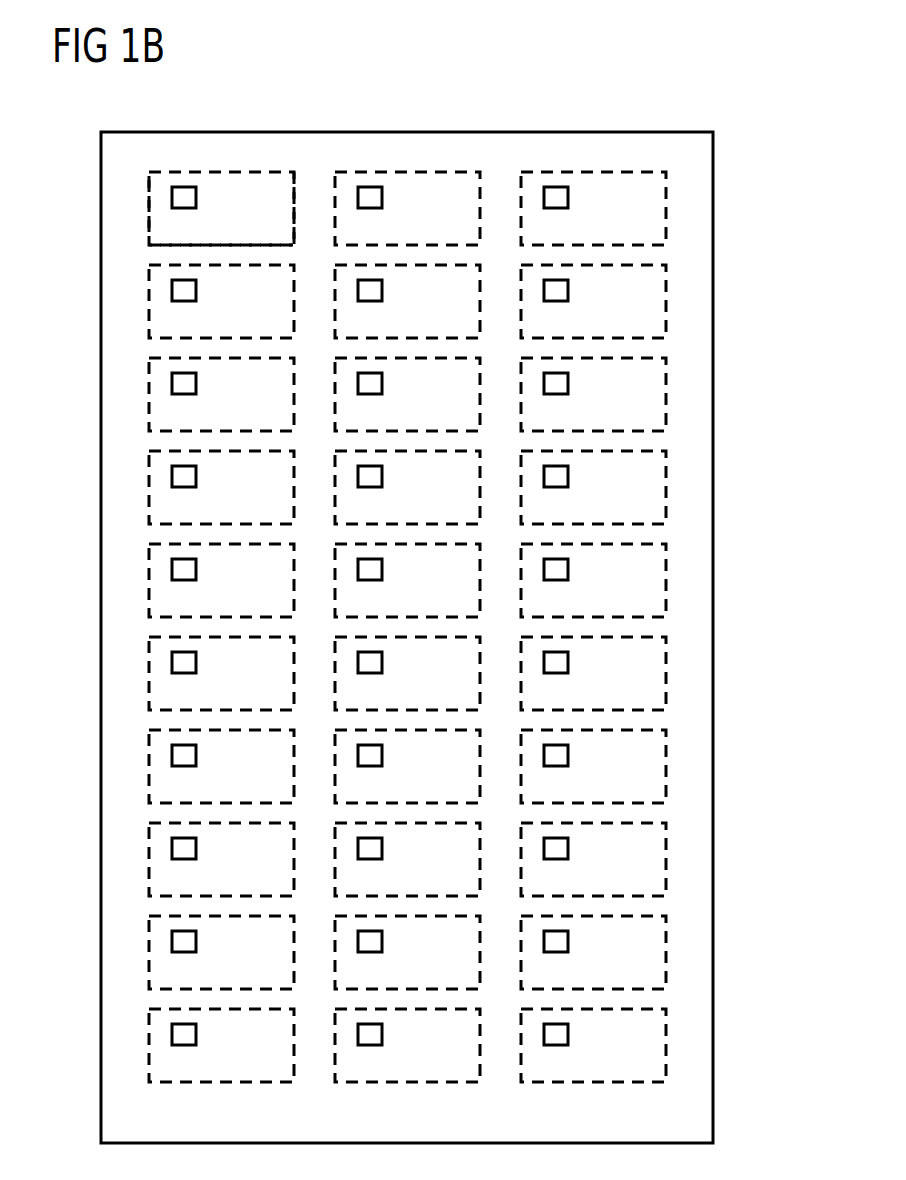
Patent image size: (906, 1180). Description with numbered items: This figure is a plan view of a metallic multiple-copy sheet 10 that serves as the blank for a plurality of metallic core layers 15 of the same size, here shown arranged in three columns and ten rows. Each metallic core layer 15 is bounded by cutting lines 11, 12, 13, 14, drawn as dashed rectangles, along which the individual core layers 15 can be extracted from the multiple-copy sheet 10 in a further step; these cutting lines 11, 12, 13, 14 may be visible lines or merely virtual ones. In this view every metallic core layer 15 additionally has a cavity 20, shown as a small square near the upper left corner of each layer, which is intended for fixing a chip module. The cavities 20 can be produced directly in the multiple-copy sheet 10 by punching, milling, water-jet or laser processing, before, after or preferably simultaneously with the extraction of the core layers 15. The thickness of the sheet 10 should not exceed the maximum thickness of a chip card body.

The metallic multiple-copy sheet 10 is at (706, 220).
The cutting line 11 is at (222, 172).
The cutting line 12 is at (148, 212).
The cutting line 13 is at (158, 245).
The cutting line 14 is at (296, 195).
The metallic core layer 15 is at (648, 415).
The cavity 20 is at (568, 381).